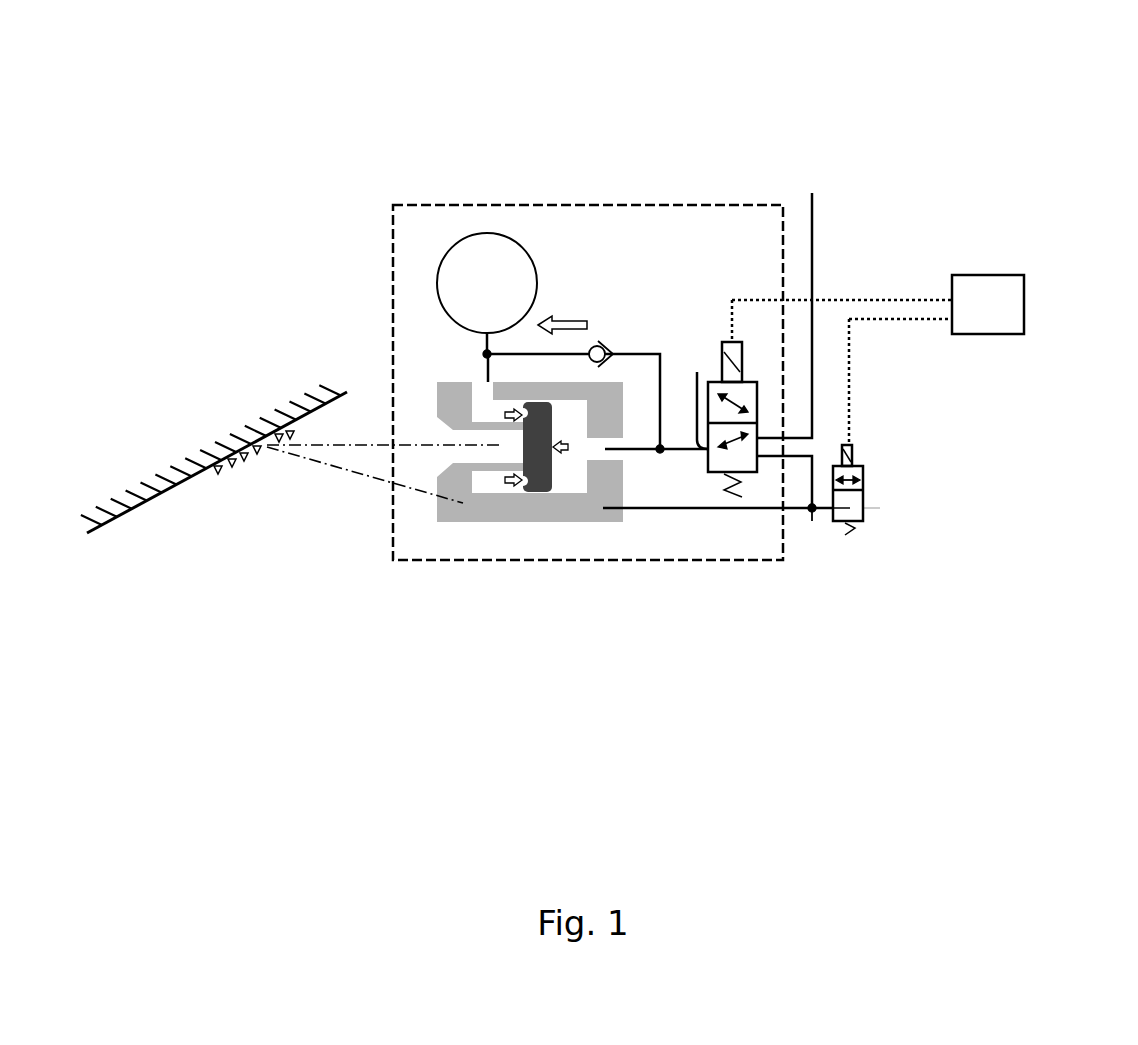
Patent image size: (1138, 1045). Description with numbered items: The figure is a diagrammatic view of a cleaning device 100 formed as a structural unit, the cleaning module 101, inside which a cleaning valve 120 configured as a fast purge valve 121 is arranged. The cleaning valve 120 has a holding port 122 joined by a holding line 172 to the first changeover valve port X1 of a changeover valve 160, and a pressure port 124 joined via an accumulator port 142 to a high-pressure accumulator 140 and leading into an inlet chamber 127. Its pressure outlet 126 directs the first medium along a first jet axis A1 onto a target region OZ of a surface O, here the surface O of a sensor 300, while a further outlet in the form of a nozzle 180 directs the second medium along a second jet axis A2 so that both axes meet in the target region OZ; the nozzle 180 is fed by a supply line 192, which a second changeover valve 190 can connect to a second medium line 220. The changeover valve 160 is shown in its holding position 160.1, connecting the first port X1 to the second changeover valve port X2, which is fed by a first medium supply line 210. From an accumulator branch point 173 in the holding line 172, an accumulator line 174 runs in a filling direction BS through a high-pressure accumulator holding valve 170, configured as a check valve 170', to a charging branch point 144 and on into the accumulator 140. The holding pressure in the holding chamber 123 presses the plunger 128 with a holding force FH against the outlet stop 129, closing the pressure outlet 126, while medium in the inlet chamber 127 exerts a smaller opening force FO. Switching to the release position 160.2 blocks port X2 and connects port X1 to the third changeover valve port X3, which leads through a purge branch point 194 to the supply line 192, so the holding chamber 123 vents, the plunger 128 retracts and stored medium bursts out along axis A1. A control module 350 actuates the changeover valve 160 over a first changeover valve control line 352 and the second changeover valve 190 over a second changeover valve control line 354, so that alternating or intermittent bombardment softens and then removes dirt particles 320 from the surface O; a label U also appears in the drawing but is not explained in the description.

The cleaning device 100 is at (909, 112).
The cleaning module 101 is at (743, 205).
The cleaning valve 120 is at (440, 538).
The fast purge valve 121 is at (560, 500).
The holding port 122 is at (624, 452).
The holding chamber 123 is at (587, 483).
The pressure port 124 is at (474, 380).
The pressure outlet 126 is at (445, 445).
The inlet chamber 127 is at (485, 416).
The plunger 128 is at (548, 492).
The outlet stop 129 is at (519, 463).
The high-pressure accumulator 140 is at (455, 277).
The accumulator port 142 is at (483, 345).
The charging branch point 144 is at (483, 355).
The changeover valve 160 is at (759, 360).
The holding position 160.1 is at (853, 437).
The release position 160.2 is at (757, 387).
The high-pressure accumulator holding valve 170 is at (603, 269).
The check valve 170' is at (571, 240).
The holding line 172 is at (673, 442).
The accumulator branch point 173 is at (663, 450).
The accumulator line 174 is at (653, 346).
The nozzle 180 is at (430, 498).
The second changeover valve 190 is at (846, 530).
The supply line 192 is at (648, 510).
The purge branch point 194 is at (814, 526).
The first medium supply line 210 is at (813, 248).
The second medium line 220 is at (876, 512).
The sensor 300 is at (187, 441).
The dirt particles 320 is at (237, 477).
The control module 350 is at (1008, 283).
The first changeover valve control line 352 is at (920, 300).
The second changeover valve control line 354 is at (850, 411).
The filling direction BS is at (570, 317).
The opening force FO is at (507, 482).
The holding force FH is at (565, 458).
The first jet axis A1 is at (370, 445).
The second jet axis A2 is at (365, 476).
The surface O is at (163, 491).
The target region OZ is at (259, 453).
The environment U is at (231, 619).
The first changeover valve port X1 is at (686, 362).
The second changeover valve port X2 is at (760, 438).
The third changeover valve port X3 is at (758, 460).